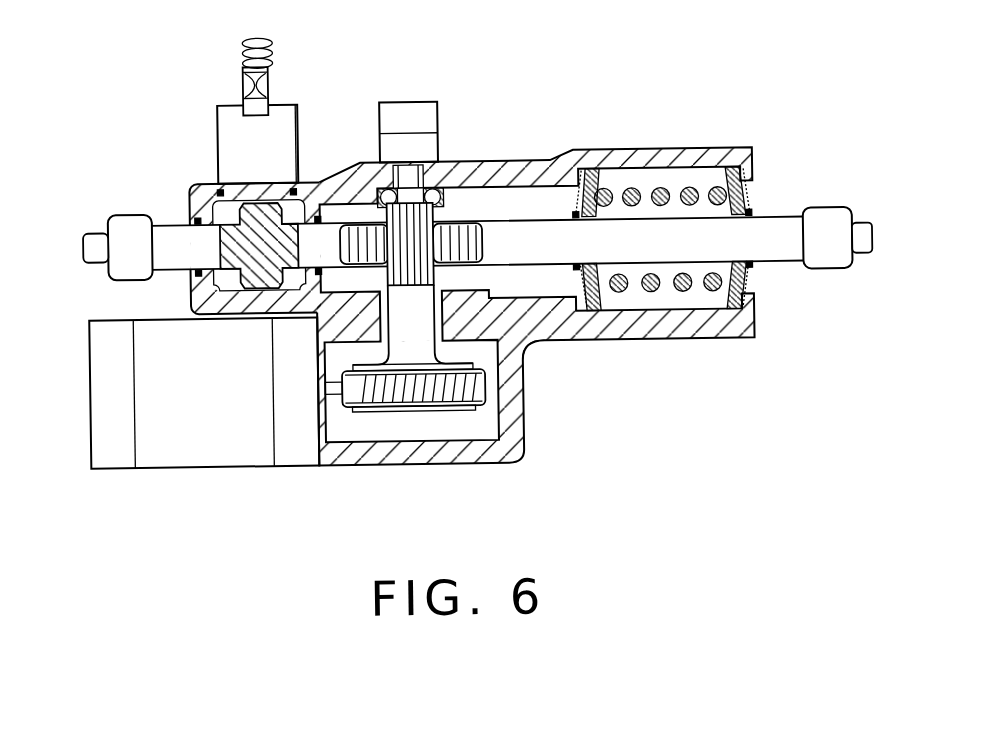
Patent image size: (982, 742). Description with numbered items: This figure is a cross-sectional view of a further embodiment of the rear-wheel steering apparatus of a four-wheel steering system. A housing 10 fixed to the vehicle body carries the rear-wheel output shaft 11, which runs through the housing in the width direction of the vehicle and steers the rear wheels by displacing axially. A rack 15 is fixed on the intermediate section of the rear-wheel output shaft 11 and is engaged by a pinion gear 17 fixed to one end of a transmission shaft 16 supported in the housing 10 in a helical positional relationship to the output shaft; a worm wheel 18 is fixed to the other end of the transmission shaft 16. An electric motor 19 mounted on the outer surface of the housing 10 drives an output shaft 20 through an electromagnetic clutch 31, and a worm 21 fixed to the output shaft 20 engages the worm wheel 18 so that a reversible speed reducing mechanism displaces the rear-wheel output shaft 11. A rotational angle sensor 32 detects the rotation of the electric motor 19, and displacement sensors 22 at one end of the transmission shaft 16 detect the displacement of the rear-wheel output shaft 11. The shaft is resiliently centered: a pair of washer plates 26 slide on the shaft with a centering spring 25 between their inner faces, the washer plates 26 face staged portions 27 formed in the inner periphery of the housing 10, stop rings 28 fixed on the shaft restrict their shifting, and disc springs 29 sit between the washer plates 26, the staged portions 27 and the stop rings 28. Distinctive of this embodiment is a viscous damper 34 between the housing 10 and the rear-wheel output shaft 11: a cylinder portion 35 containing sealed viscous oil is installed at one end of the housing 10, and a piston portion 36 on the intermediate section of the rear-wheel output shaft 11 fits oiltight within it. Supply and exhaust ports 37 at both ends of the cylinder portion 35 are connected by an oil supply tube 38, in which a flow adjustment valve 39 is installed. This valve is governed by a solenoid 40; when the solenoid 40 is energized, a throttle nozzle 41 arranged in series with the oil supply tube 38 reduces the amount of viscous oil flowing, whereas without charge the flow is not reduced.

The housing 10 is at (680, 155).
The rear-wheel output shaft 11 is at (785, 227).
The rack 15 is at (469, 237).
The transmission shaft 16 is at (410, 351).
The pinion gear 17 is at (523, 357).
The worm wheel 18 is at (512, 460).
The electric motor 19 is at (192, 446).
The output shaft 20 is at (333, 388).
The worm 21 is at (440, 397).
The displacement sensor 22 is at (430, 117).
The centering spring 25 is at (683, 293).
The washer plate 26 is at (593, 314).
The staged portion 27 is at (593, 168).
The stop ring 28 is at (574, 213).
The disc spring 29 is at (745, 212).
The electromagnetic clutch 31 is at (297, 447).
The rotational angle sensor 32 is at (117, 445).
The viscous damper 34 is at (233, 92).
The cylinder portion 35 is at (258, 302).
The piston portion 36 is at (274, 210).
The supply and exhaust port 37 is at (221, 188).
The oil supply tube 38 is at (221, 151).
The flow adjustment valve 39 is at (274, 80).
The solenoid 40 is at (267, 37).
The throttle nozzle 41 is at (247, 74).